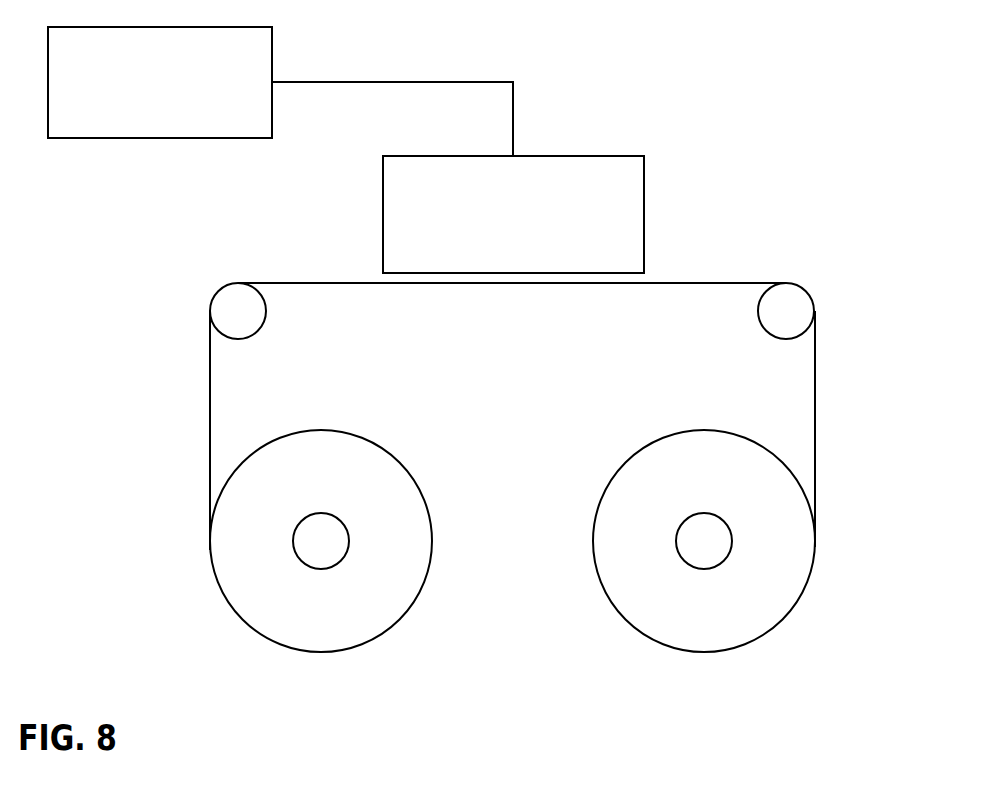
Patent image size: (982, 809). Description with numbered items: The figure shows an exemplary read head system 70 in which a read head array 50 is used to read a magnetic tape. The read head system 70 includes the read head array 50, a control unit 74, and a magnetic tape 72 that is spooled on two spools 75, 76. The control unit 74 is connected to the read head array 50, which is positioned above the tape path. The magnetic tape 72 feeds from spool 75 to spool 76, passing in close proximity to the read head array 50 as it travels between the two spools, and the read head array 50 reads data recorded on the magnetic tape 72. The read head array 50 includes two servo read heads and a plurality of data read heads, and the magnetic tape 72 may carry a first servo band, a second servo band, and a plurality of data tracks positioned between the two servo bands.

The read head system 70 is at (718, 83).
The control unit 74 is at (173, 108).
The read head array 50 is at (527, 253).
The magnetic tape 72 is at (210, 387).
The spool 75 is at (433, 540).
The spool 76 is at (592, 541).